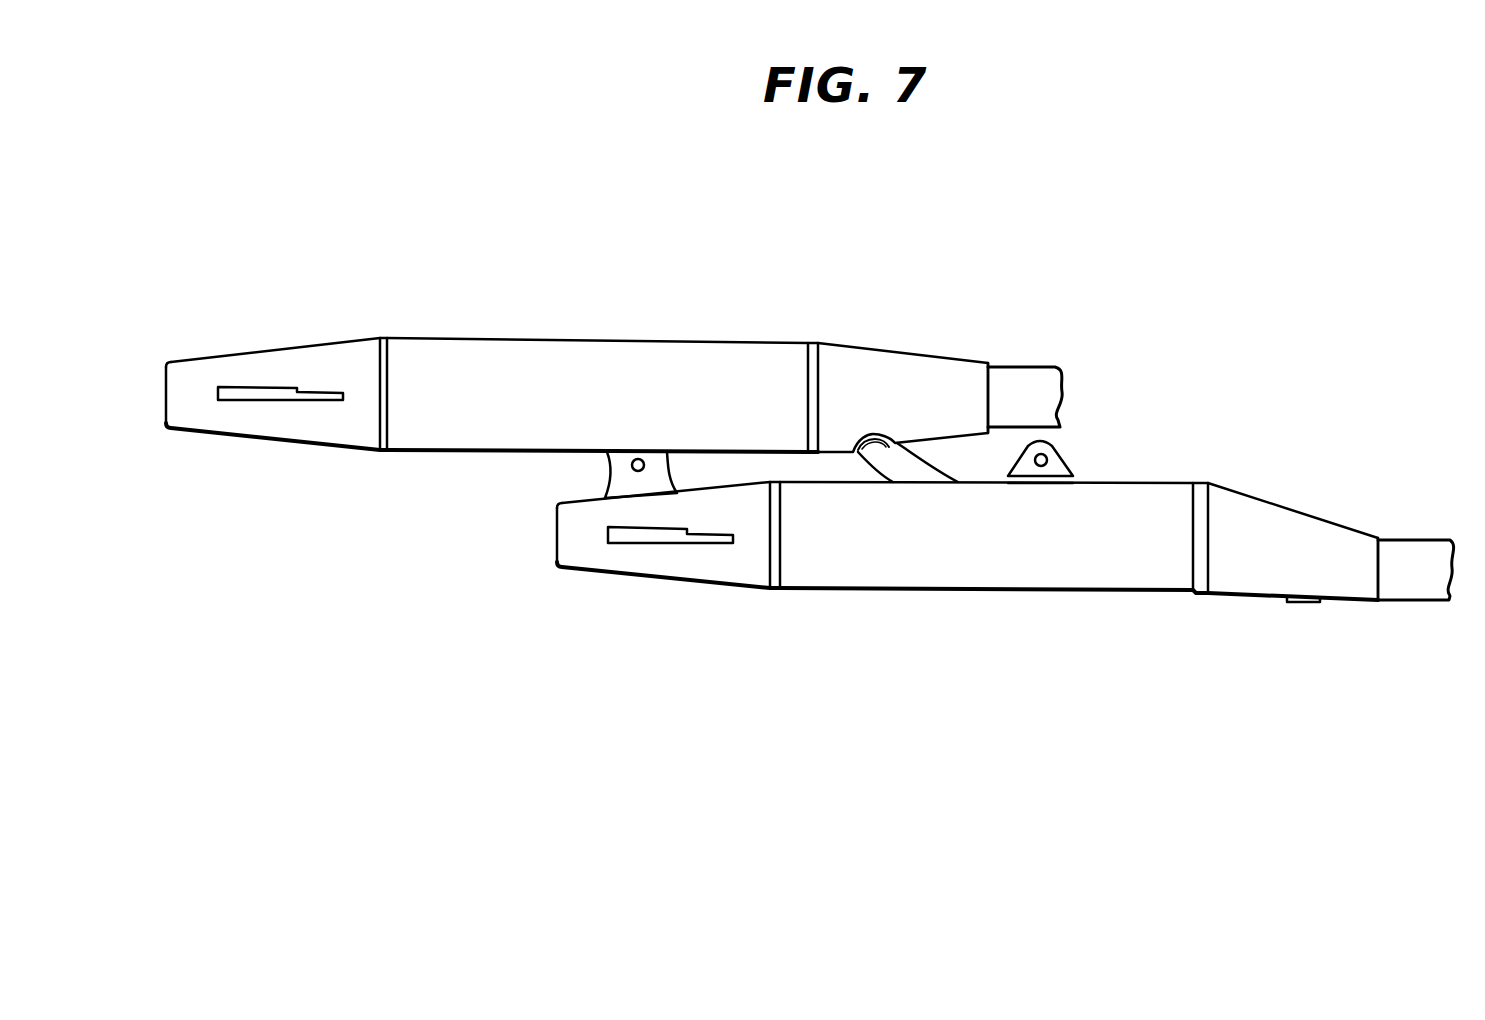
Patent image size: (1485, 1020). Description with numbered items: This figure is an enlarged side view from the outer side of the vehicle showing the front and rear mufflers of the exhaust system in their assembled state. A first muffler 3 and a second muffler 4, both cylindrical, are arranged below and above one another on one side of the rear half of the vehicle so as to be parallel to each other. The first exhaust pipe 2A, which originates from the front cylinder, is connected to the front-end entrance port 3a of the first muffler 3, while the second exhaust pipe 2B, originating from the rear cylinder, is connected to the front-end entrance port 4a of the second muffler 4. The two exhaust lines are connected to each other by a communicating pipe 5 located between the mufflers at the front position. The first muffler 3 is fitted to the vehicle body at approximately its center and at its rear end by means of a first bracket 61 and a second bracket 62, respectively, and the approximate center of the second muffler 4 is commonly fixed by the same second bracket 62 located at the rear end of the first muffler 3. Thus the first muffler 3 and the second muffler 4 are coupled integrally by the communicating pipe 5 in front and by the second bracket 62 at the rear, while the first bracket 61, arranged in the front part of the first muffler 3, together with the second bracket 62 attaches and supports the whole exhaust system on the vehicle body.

The first exhaust pipe 2A is at (1428, 555).
The second exhaust pipe 2B is at (1062, 383).
The first muffler 3 is at (851, 591).
The front-end entrance port of first muffler 3a is at (1383, 560).
The second muffler 4 is at (594, 342).
The front-end entrance port of second muffler 4a is at (992, 365).
The communicating pipe 5 is at (910, 470).
The first bracket 61 is at (1050, 460).
The second bracket 62 is at (617, 490).